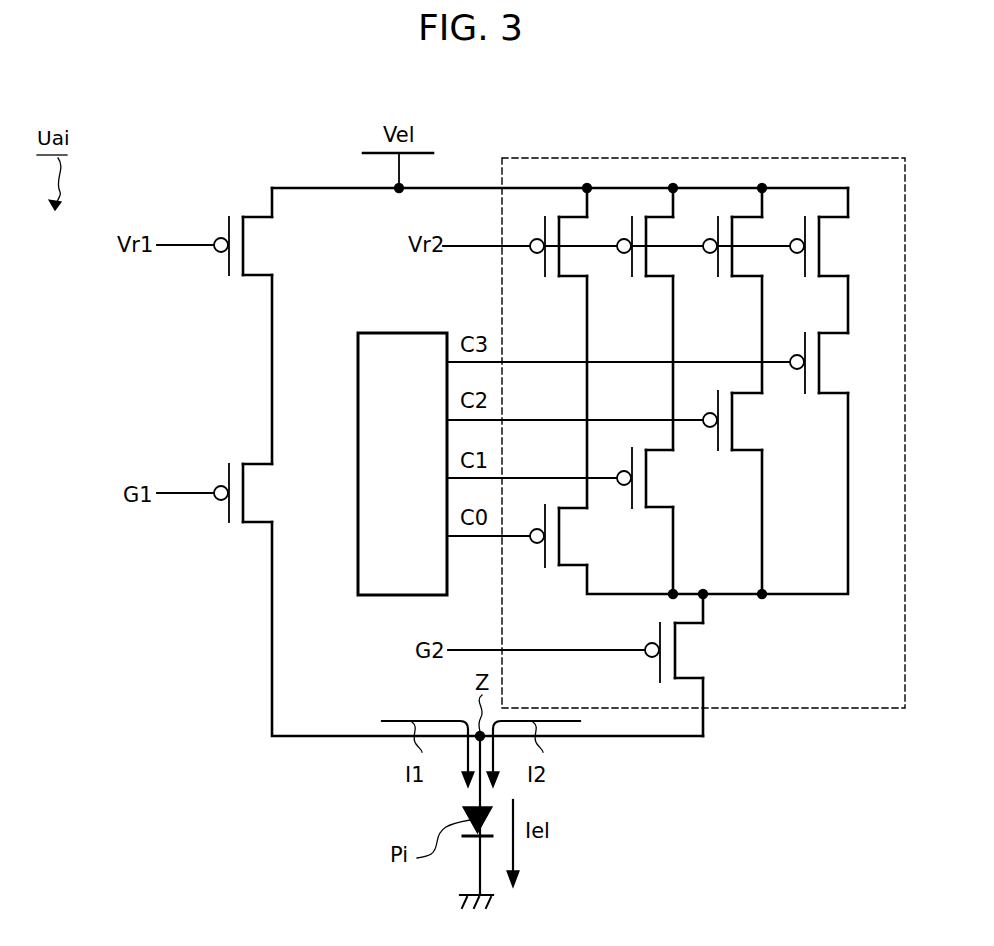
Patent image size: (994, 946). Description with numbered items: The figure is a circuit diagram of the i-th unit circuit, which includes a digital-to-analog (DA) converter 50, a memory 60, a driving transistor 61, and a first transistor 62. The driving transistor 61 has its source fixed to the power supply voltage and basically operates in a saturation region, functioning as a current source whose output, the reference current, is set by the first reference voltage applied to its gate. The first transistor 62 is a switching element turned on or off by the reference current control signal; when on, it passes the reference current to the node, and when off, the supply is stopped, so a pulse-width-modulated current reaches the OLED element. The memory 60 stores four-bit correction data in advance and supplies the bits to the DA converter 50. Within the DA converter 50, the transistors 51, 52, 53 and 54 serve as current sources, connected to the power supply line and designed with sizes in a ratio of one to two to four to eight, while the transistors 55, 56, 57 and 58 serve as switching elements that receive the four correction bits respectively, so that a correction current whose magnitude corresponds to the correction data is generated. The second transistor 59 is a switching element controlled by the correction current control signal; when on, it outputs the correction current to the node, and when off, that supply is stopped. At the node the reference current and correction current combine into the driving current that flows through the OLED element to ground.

The digital-to-analog (DA) converter 50 is at (853, 711).
The transistor 51 is at (563, 228).
The transistor 52 is at (650, 228).
The transistor 53 is at (736, 228).
The transistor 54 is at (823, 228).
The transistor 55 is at (563, 531).
The transistor 56 is at (650, 474).
The transistor 57 is at (736, 418).
The transistor 58 is at (823, 361).
The second transistor 59 is at (679, 648).
The memory 60 is at (412, 332).
The driving transistor 61 is at (247, 244).
The first transistor 62 is at (247, 498).